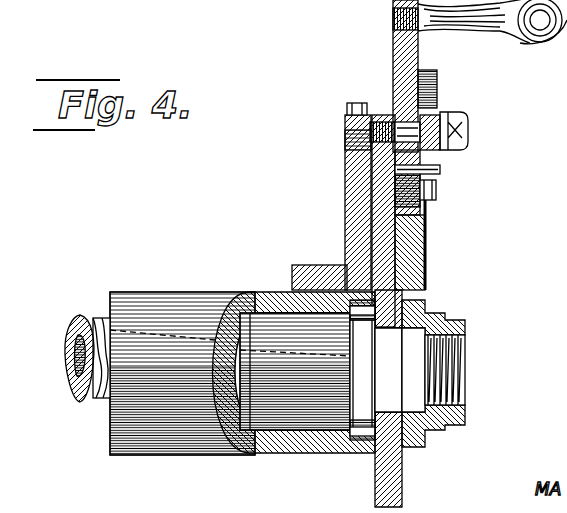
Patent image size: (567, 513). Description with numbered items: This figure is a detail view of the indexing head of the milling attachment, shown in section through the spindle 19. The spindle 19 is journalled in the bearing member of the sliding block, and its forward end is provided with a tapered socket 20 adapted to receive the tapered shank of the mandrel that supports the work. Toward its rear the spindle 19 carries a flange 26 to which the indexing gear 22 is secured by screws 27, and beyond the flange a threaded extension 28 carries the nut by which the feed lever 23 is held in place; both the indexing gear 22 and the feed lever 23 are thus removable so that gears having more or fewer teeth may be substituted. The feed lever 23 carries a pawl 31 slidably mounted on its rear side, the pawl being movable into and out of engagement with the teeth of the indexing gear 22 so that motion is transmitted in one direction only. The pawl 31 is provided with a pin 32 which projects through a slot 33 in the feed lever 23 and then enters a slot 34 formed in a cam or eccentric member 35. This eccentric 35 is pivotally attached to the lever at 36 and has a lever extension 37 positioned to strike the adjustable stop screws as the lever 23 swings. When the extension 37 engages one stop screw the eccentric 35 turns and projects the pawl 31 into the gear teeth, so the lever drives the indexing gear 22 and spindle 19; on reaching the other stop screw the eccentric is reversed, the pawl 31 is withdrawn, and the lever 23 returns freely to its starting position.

The spindle 19 is at (110, 340).
The tapered socket 20 is at (65, 362).
The indexing gear 22 is at (390, 266).
The feed lever 23 is at (417, 52).
The flange 26 is at (357, 330).
The screws 27 is at (390, 306).
The threaded extension 28 is at (463, 333).
The pawl 31 is at (372, 224).
The pin 32 is at (345, 192).
The slot 33 is at (410, 205).
The slot 34 is at (420, 172).
The cam or eccentric member 35 is at (432, 148).
The pivot 36 is at (452, 137).
The lever extension 37 is at (430, 84).